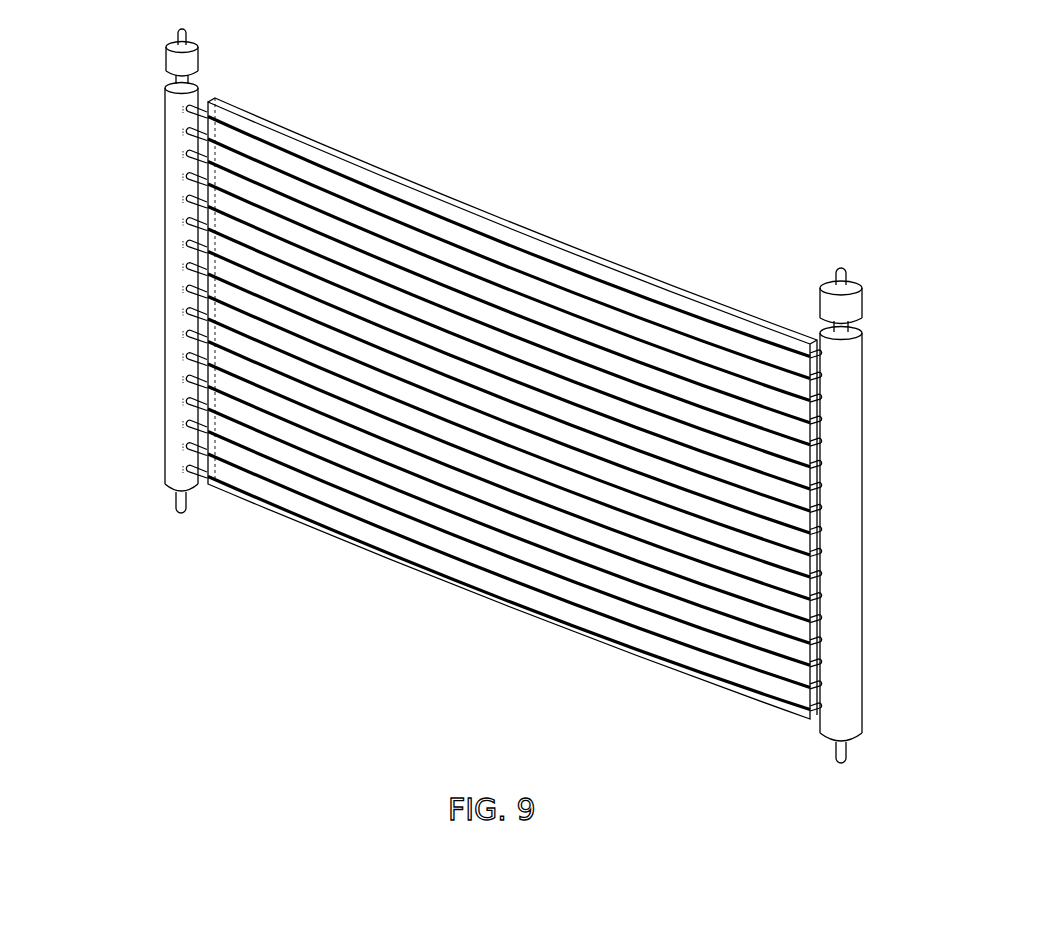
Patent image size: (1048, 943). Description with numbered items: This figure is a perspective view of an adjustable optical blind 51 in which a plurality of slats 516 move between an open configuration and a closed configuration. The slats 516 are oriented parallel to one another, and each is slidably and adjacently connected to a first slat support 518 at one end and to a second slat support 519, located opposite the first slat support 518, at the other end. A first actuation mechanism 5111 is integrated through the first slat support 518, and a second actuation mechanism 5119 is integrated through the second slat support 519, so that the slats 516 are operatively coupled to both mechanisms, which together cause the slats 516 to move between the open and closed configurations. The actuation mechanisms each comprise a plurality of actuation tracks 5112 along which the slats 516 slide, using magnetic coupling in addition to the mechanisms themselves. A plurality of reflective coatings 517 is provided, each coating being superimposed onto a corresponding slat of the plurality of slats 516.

The adjustable optical blind 51 is at (553, 396).
The plurality of slats 516 is at (372, 568).
The plurality of reflective coatings 517 is at (376, 172).
The first slat support 518 is at (169, 247).
The second slat support 519 is at (854, 512).
The first actuation mechanism 5111 is at (173, 62).
The plurality of actuation tracks 5112 is at (187, 140).
The second actuation mechanism 5119 is at (880, 300).